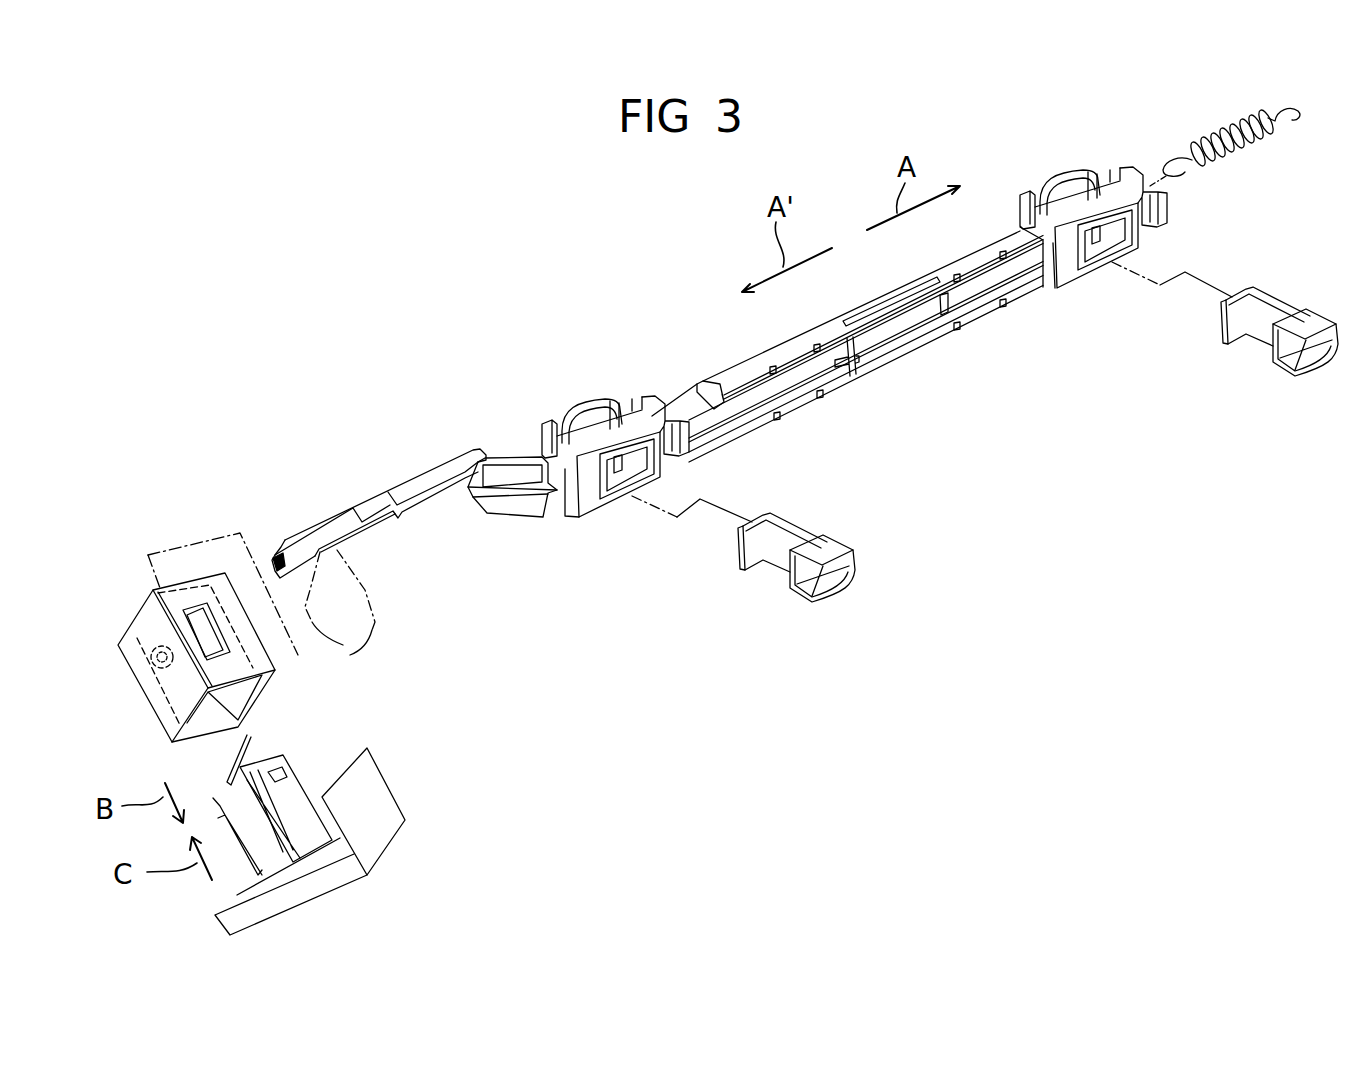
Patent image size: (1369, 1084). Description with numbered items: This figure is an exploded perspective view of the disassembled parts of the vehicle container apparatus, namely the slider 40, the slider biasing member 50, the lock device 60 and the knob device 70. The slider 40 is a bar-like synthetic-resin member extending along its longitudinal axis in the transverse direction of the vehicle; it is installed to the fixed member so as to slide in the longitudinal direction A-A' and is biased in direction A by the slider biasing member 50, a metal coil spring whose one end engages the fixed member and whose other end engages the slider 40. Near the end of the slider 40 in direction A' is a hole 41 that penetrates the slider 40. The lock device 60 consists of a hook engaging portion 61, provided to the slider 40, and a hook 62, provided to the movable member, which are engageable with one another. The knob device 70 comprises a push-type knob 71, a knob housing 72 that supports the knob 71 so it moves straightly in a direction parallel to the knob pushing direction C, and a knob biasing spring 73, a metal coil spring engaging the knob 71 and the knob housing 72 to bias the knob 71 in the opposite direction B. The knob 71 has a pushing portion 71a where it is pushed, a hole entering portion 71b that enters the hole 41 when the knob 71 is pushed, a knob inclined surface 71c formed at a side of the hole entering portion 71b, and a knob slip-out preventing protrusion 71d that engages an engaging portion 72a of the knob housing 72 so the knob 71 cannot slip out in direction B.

The slider 40 is at (883, 293).
The hole 41 is at (370, 533).
The slider biasing member 50 is at (1240, 155).
The lock device 60 is at (1316, 322).
The hook engaging portion 61 is at (1090, 258).
The hook 62 is at (1240, 335).
The knob device 70 is at (387, 856).
The knob 71 is at (400, 804).
The pushing portion 71a is at (300, 908).
The hole entering portion 71b is at (253, 733).
The knob inclined surface 71c is at (233, 757).
The knob slip-out preventing protrusion 71d is at (295, 771).
The knob housing 72 is at (119, 647).
The engaging portion 72a is at (226, 645).
The knob biasing spring 73 is at (142, 693).